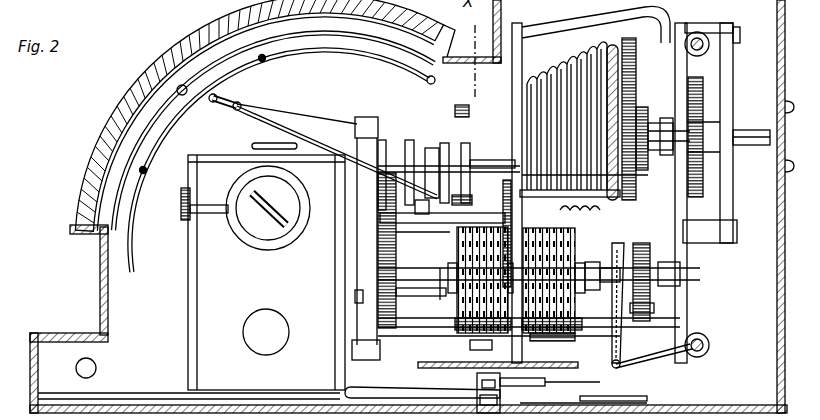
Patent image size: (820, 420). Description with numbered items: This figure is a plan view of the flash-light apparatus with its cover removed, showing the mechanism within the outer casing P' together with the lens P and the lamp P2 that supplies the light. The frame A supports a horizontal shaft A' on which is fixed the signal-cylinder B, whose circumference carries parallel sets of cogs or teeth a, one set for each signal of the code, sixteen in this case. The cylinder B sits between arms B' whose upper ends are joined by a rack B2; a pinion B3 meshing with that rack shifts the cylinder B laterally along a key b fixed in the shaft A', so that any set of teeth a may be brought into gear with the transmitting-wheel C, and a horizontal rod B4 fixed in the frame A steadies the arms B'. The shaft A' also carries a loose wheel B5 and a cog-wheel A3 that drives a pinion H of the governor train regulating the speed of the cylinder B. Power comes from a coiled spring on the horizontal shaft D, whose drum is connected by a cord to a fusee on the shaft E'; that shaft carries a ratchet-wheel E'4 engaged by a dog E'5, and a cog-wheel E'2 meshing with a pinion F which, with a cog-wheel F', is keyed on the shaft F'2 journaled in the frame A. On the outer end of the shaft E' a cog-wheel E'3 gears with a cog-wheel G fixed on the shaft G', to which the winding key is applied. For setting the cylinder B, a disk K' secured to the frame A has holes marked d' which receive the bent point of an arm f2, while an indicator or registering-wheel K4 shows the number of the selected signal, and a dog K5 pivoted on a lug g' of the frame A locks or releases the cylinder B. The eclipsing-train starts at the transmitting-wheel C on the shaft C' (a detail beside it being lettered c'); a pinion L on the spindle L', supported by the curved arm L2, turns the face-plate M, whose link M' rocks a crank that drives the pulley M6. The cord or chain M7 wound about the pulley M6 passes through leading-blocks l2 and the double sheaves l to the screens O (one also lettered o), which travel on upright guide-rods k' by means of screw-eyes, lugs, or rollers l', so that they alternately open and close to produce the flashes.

The outer casing P' is at (412, 206).
The lens P is at (120, 123).
The lamp P2 is at (263, 266).
The screens O is at (318, 48).
The hole o is at (303, 48).
The screw-eyes, lugs, or rollers l' is at (281, 160).
The upright guide-rods k' is at (203, 130).
The double sheave or pulley l is at (225, 95).
The face-plate M is at (337, 152).
The cord or chain M7 is at (312, 121).
The link M' is at (457, 153).
The pulley M6 is at (492, 155).
The frame A is at (543, 238).
The horizontal shaft A' is at (543, 271).
The cog-wheel A3 is at (675, 250).
The signal-cylinder B is at (472, 280).
The arms B' is at (602, 286).
The rack B2 is at (450, 328).
The pinion B3 is at (477, 341).
The horizontal rod B4 is at (529, 331).
The loose wheel B5 is at (416, 296).
The key b is at (436, 284).
The transmitting-wheel C is at (445, 233).
The shaft C' is at (423, 243).
The pawl c' is at (432, 212).
The horizontal shaft D is at (626, 22).
The shaft E' is at (591, 184).
The cog-wheel E'2 is at (642, 115).
The cog-wheel E'3 is at (689, 106).
The ratchet-wheel E'4 is at (656, 116).
The dog E'5 is at (650, 113).
The pinion F is at (561, 274).
The cog-wheel F' is at (596, 138).
The shaft F'2 is at (565, 204).
The cog-wheel G is at (703, 137).
The shaft G' is at (745, 133).
The pinion H is at (616, 256).
The lug g' is at (654, 359).
The disk K' is at (461, 379).
The indicator or registering-wheel K4 is at (655, 404).
The dog K5 is at (613, 385).
The pinion L is at (449, 175).
The spindle L' is at (373, 250).
The curved arm L2 is at (409, 140).
The leading-blocks l2 is at (468, 154).
The cogs or teeth a is at (554, 282).
The pin d' is at (412, 378).
The arm f2 is at (550, 386).